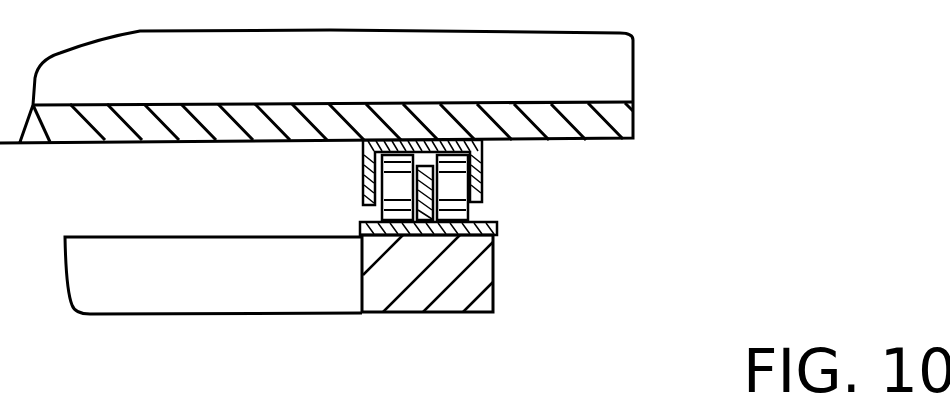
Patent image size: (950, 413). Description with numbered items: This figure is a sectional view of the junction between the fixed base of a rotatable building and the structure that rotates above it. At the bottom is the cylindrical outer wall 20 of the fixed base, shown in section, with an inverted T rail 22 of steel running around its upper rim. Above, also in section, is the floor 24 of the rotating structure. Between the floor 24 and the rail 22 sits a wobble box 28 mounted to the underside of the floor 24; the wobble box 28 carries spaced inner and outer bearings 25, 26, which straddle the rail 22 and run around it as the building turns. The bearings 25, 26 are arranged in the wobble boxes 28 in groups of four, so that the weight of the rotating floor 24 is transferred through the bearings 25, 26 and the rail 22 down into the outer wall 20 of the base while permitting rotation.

The cylindrical outer wall 20 is at (470, 277).
The inverted T rail 22 is at (490, 222).
The floor 24 is at (607, 110).
The inner bearing 25 is at (403, 183).
The outer bearing 26 is at (460, 163).
The wobble box 28 is at (362, 146).